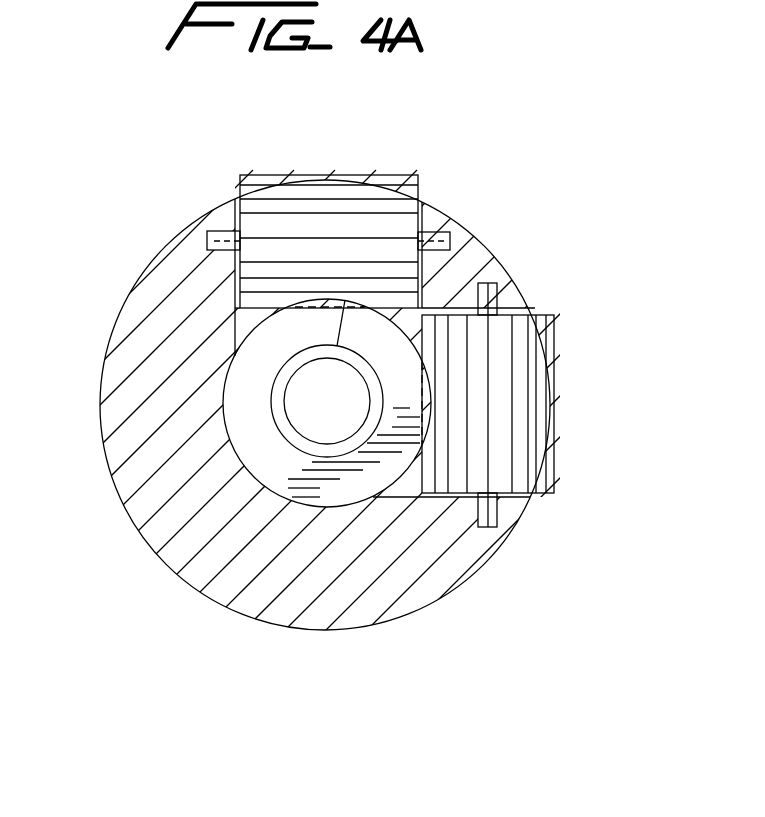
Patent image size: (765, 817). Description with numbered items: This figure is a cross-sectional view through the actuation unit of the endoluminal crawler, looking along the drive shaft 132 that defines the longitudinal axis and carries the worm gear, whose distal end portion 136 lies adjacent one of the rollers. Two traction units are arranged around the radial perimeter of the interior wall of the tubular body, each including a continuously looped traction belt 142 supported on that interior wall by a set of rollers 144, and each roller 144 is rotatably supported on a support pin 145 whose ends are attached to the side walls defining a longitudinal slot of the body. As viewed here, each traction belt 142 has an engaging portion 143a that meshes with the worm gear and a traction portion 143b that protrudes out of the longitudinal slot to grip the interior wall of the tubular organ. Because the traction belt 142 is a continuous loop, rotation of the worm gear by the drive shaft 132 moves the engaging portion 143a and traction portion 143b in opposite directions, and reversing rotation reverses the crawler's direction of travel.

The drive shaft 132 is at (285, 428).
The distal end portion 136 is at (247, 400).
The traction belt 142 is at (372, 177).
The engaging portion 143a is at (234, 328).
The traction portion 143b is at (286, 176).
The roller 144 is at (422, 213).
The support pin 145 is at (448, 241).